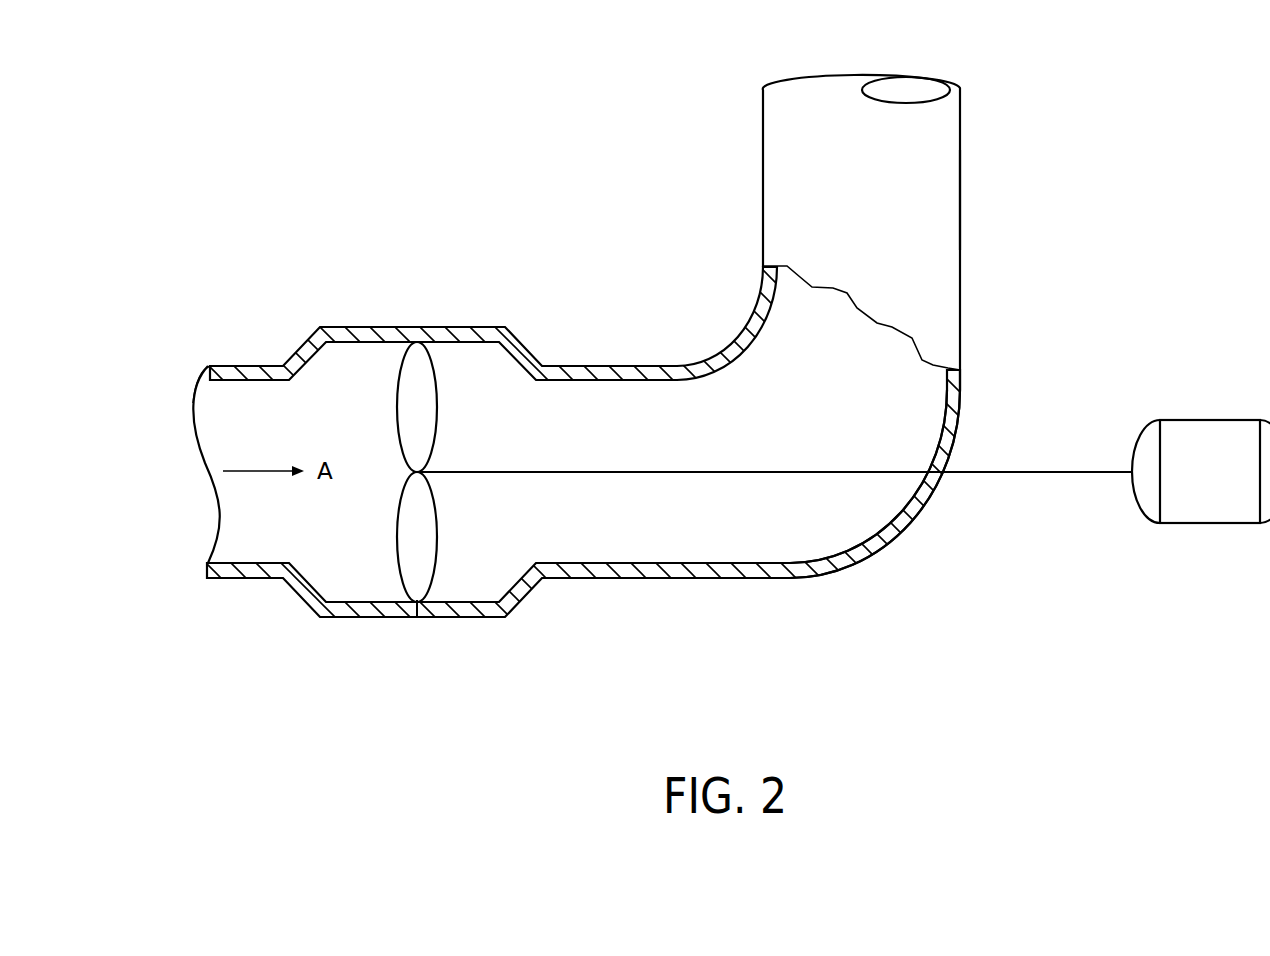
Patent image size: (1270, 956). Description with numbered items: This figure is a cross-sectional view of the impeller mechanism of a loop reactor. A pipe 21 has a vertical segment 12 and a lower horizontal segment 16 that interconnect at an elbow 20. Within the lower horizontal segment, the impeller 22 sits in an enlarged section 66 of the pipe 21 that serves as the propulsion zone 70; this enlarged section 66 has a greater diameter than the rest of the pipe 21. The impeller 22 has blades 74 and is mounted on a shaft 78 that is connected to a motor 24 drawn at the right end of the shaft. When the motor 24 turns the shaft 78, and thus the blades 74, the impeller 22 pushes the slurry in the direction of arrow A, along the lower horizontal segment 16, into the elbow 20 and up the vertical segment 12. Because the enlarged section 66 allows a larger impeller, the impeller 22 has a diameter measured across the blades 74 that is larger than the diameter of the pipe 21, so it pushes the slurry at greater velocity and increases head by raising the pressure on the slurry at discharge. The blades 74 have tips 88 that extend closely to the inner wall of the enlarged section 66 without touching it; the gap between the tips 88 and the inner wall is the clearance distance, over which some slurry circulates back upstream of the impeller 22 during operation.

The vertical segment 12 is at (943, 146).
The lower horizontal segment 16 is at (255, 545).
The elbow 20 is at (862, 510).
The pipe 21 is at (961, 197).
The impeller 22 is at (433, 557).
The motor 24 is at (1188, 525).
The enlarged section 66 is at (348, 618).
The propulsion zone 70 is at (507, 376).
The blades 74 is at (417, 360).
The shaft 78 is at (712, 474).
The tips 88 is at (417, 618).